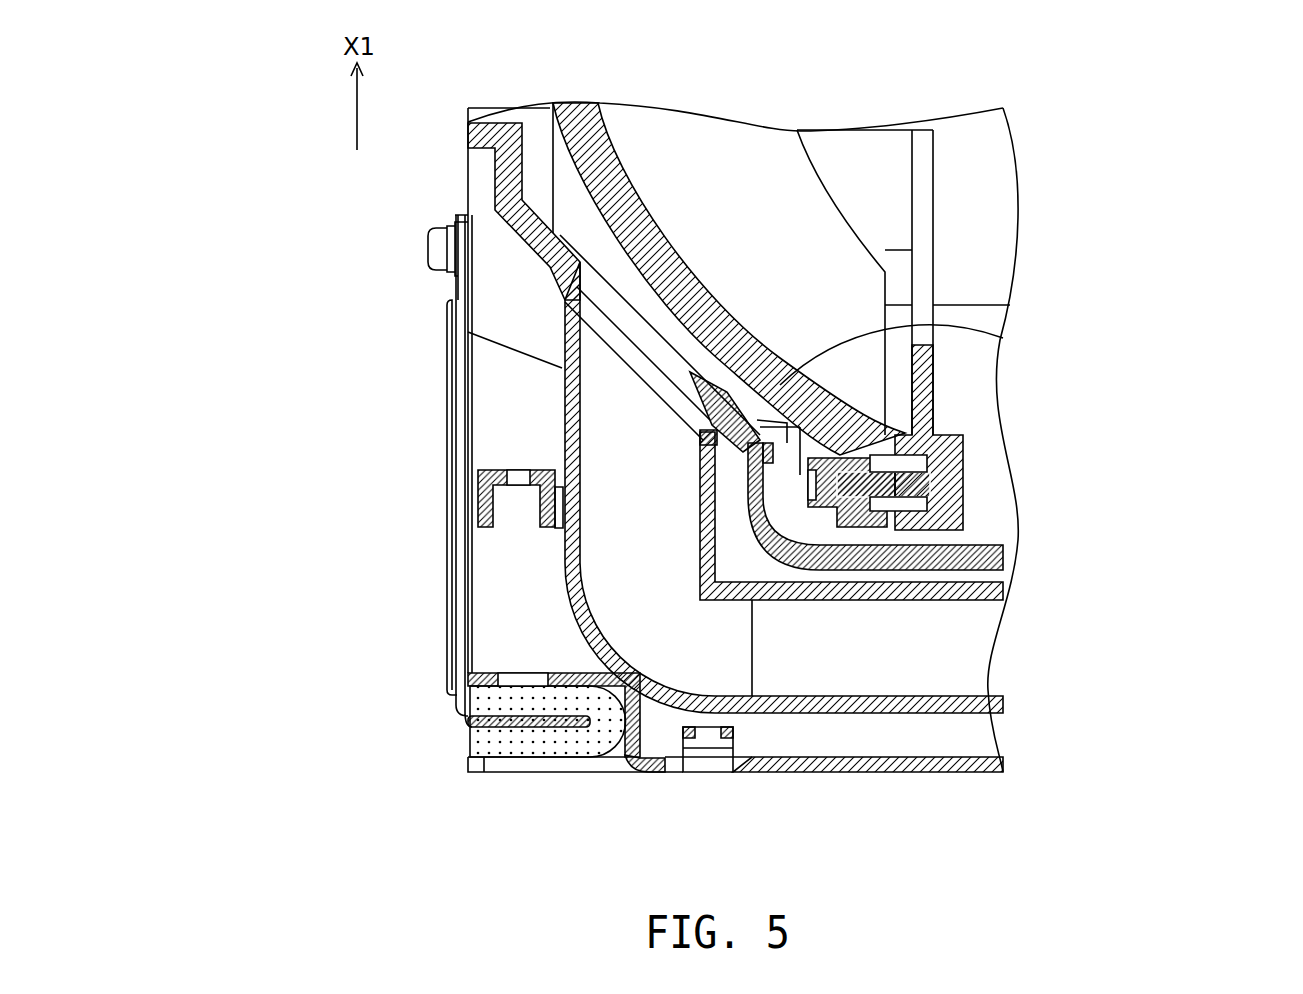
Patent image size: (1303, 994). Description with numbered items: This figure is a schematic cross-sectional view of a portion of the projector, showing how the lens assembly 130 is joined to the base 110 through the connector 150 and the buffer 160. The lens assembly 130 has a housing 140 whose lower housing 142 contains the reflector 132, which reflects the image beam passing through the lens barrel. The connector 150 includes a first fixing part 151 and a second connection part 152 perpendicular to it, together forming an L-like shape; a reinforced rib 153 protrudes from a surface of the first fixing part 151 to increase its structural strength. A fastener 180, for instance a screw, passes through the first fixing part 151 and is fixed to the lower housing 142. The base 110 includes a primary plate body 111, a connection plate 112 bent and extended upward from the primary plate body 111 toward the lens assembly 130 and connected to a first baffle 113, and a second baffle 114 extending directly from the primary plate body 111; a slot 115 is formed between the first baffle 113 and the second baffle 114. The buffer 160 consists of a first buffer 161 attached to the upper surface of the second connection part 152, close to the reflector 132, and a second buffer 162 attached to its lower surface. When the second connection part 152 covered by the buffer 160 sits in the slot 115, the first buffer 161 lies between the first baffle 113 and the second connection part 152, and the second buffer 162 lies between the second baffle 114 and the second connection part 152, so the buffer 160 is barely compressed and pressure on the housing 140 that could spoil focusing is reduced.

The base 110 is at (617, 732).
The primary plate body 111 is at (903, 768).
The connection plate 112 is at (640, 720).
The first baffle 113 is at (573, 673).
The second baffle 114 is at (537, 772).
The slot 115 is at (627, 773).
The lens assembly 130 is at (1212, 100).
The reflector 132 is at (800, 350).
The housing 140 is at (748, 437).
The lower housing 142 is at (468, 128).
The connector 150 is at (412, 483).
The first fixing part 151 is at (462, 455).
The second connection part 152 is at (510, 721).
The reinforced rib 153 is at (450, 342).
The buffer 160 is at (207, 695).
The first buffer 161 is at (490, 703).
The second buffer 162 is at (490, 748).
The fastener 180 is at (432, 250).